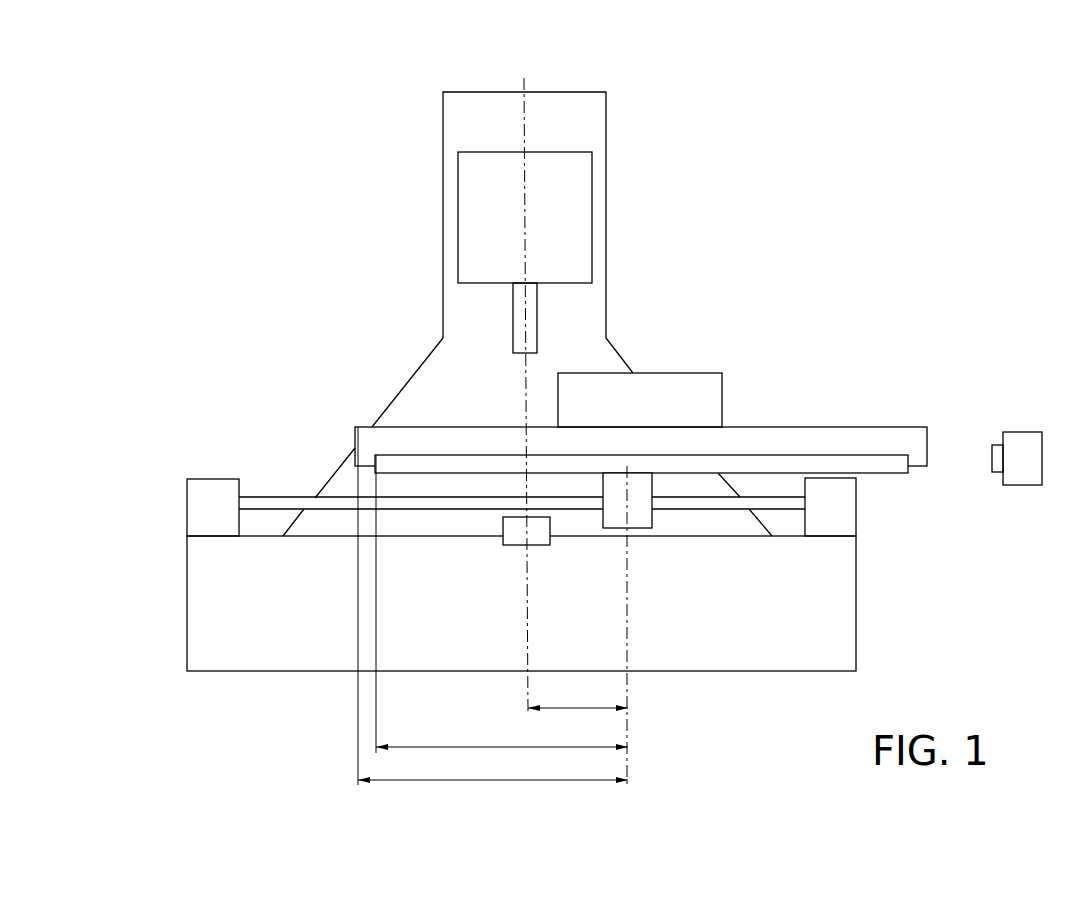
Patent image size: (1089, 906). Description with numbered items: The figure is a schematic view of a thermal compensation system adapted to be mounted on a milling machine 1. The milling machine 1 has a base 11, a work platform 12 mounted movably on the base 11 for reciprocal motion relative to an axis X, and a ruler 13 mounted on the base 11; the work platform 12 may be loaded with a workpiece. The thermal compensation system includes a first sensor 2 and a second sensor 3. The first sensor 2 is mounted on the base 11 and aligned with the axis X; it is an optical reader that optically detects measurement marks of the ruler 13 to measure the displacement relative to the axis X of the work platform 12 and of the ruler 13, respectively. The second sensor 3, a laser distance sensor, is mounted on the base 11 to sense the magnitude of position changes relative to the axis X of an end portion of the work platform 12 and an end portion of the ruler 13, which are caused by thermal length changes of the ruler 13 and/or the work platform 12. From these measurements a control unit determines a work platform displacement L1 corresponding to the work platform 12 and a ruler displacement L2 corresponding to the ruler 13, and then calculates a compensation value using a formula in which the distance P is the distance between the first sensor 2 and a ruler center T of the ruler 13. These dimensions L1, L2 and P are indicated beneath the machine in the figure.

The milling machine 1 is at (713, 283).
The first sensor 2 is at (498, 511).
The second sensor 3 is at (1021, 424).
The base 11 is at (857, 632).
The work platform 12 is at (840, 427).
The ruler 13 is at (737, 460).
The ruler center T is at (631, 458).
The axis X is at (524, 381).
The distance between the first sensor and the ruler center P is at (578, 696).
The work platform displacement L1 is at (493, 606).
The ruler displacement L2 is at (502, 604).